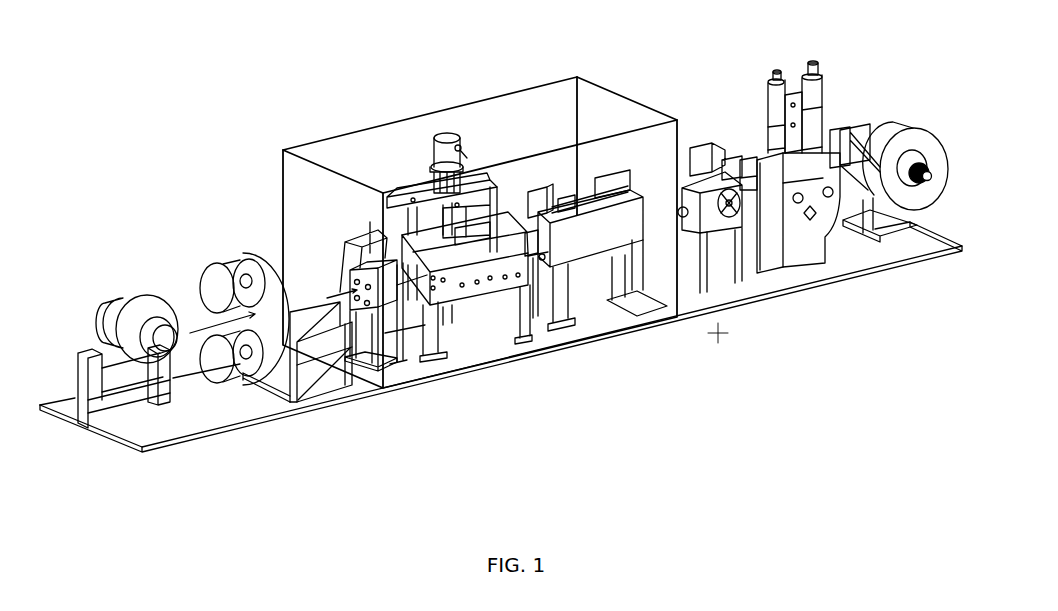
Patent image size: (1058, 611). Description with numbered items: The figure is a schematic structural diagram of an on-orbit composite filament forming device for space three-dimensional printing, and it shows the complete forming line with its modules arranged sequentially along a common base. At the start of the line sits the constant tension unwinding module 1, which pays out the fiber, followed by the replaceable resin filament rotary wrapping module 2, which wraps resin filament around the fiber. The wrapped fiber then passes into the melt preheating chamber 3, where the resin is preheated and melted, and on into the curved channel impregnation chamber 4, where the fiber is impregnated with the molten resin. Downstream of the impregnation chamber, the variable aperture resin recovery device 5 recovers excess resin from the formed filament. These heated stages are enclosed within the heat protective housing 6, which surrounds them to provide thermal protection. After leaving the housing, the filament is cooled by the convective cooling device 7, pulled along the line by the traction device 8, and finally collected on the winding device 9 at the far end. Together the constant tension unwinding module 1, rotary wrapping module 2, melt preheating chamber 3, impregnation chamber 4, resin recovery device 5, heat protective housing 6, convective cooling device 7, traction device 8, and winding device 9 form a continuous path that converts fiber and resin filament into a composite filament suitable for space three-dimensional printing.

The constant tension unwinding module 1 is at (165, 343).
The replaceable resin filament rotary wrapping module 2 is at (278, 325).
The melt preheating chamber 3 is at (393, 290).
The curved channel impregnation chamber 4 is at (487, 268).
The variable aperture resin recovery device 5 is at (617, 227).
The heat protective housing 6 is at (417, 168).
The convective cooling device 7 is at (680, 162).
The traction device 8 is at (768, 162).
The winding device 9 is at (912, 155).